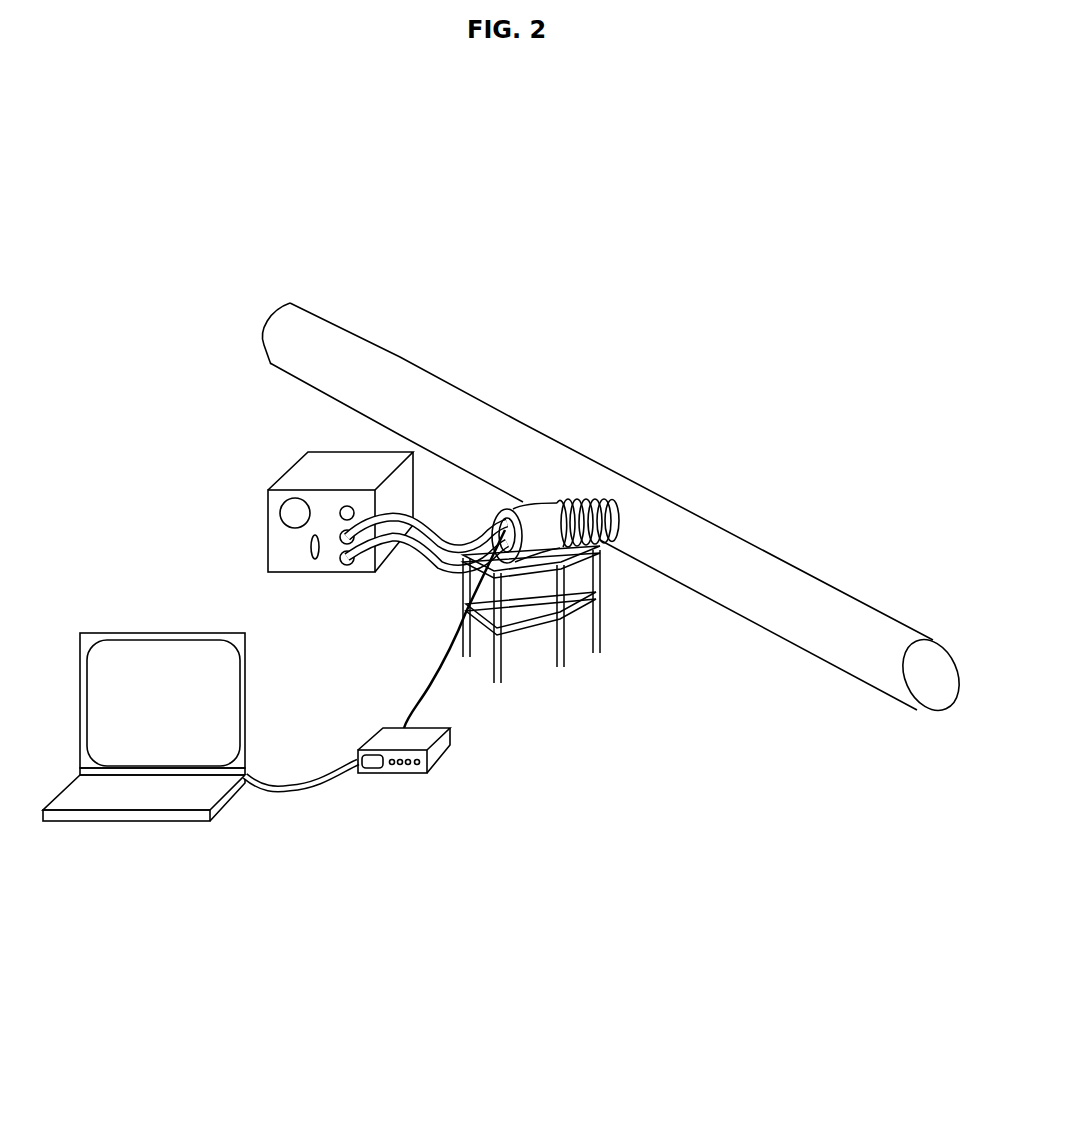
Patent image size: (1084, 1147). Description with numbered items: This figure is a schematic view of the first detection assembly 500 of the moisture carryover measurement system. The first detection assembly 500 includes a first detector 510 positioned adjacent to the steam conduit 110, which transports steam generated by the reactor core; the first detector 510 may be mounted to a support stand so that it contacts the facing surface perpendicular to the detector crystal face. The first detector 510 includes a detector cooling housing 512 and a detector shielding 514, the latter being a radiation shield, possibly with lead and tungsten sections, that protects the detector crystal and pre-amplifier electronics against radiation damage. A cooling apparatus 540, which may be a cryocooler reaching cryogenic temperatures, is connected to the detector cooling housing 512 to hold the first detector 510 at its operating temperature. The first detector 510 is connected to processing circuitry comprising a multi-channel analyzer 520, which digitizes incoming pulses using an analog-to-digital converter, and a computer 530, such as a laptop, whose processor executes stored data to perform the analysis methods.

The steam conduit 110 is at (745, 560).
The first detection assembly 500 is at (523, 170).
The first detector 510 is at (542, 570).
The detector cooling housing 512 is at (537, 500).
The detector shielding 514 is at (605, 500).
The multi-channel analyzer 520 is at (392, 787).
The computer 530 is at (136, 834).
The cooling apparatus 540 is at (265, 459).